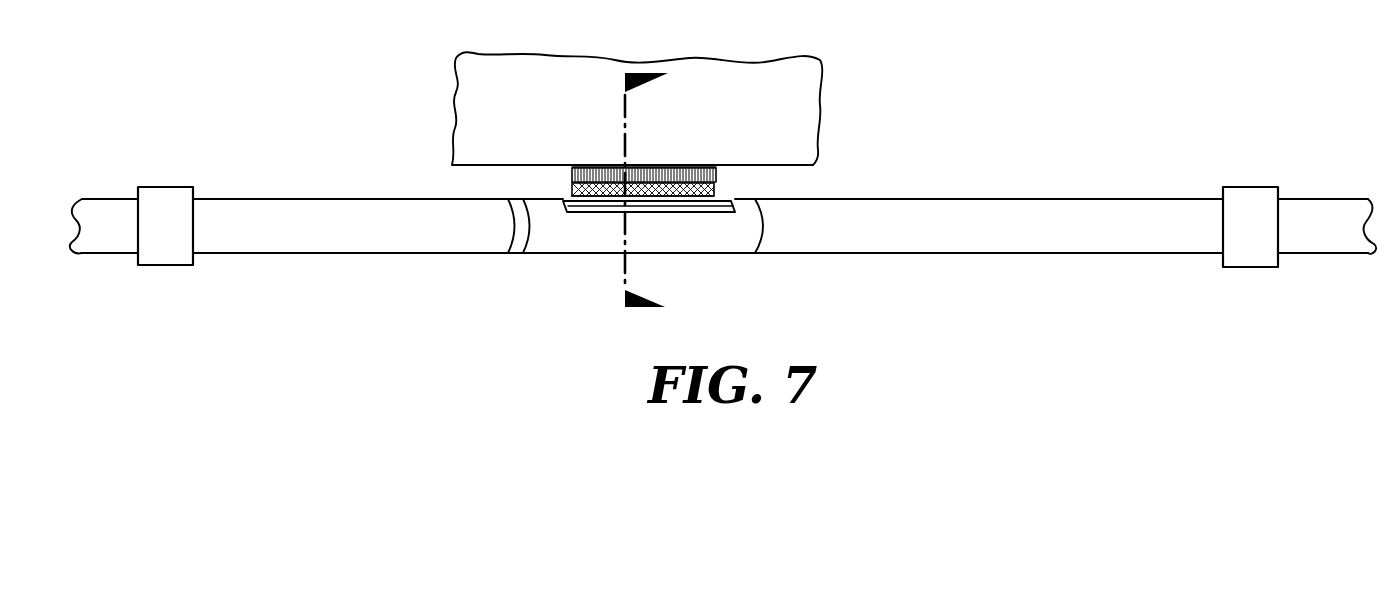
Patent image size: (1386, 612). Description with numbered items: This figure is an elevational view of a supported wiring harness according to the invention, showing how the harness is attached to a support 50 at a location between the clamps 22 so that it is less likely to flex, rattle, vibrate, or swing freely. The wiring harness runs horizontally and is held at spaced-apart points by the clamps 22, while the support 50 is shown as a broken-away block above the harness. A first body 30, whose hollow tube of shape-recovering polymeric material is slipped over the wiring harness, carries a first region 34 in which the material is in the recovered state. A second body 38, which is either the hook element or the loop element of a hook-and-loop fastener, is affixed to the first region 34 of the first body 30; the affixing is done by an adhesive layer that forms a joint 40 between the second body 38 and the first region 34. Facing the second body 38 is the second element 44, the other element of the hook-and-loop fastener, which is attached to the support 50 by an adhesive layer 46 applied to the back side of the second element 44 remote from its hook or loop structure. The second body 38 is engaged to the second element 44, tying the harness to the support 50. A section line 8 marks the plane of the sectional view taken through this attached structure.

The section line 8- 8 is at (658, 191).
The clamps 22 is at (164, 199).
The first body 30 is at (543, 246).
The first region 34 is at (700, 203).
The second body 38 is at (717, 189).
The joint 40 is at (593, 198).
The second element 44 is at (572, 175).
The adhesive layer 46 is at (697, 165).
The support 50 is at (472, 71).